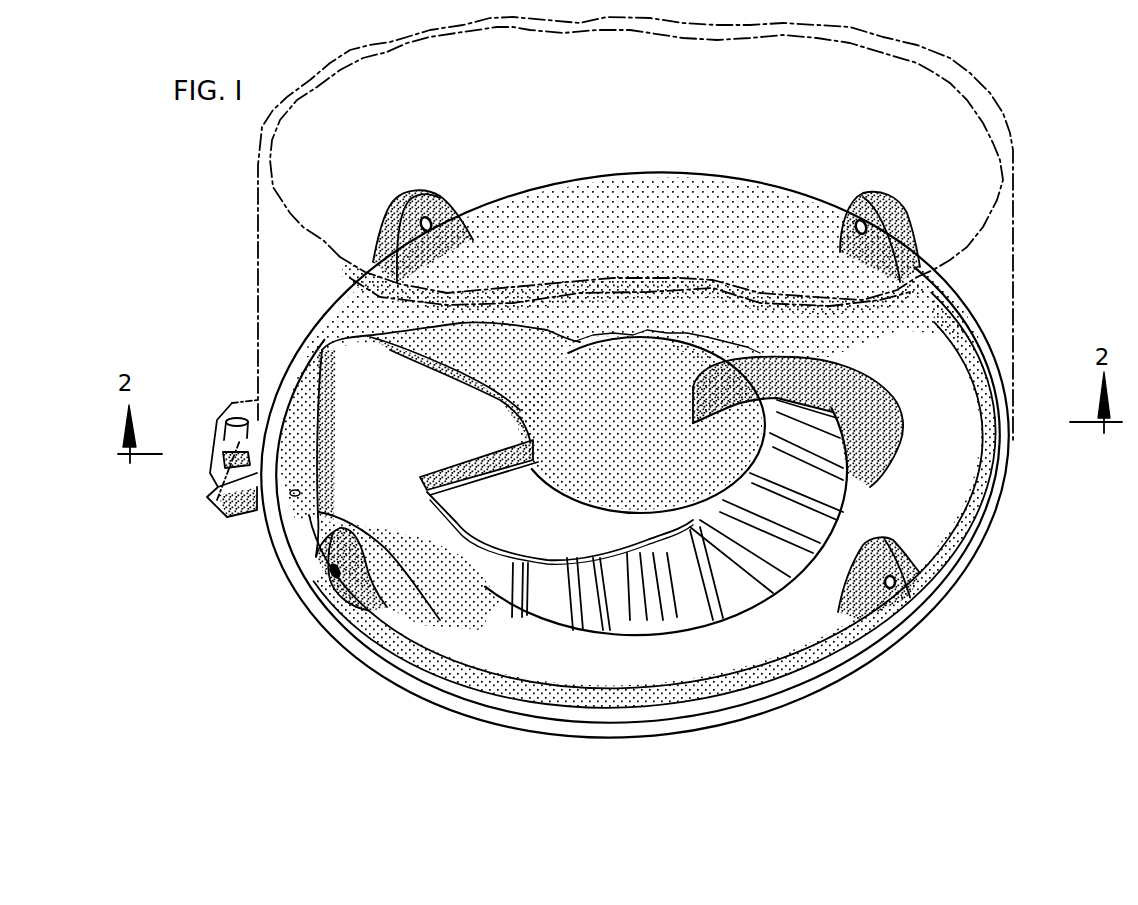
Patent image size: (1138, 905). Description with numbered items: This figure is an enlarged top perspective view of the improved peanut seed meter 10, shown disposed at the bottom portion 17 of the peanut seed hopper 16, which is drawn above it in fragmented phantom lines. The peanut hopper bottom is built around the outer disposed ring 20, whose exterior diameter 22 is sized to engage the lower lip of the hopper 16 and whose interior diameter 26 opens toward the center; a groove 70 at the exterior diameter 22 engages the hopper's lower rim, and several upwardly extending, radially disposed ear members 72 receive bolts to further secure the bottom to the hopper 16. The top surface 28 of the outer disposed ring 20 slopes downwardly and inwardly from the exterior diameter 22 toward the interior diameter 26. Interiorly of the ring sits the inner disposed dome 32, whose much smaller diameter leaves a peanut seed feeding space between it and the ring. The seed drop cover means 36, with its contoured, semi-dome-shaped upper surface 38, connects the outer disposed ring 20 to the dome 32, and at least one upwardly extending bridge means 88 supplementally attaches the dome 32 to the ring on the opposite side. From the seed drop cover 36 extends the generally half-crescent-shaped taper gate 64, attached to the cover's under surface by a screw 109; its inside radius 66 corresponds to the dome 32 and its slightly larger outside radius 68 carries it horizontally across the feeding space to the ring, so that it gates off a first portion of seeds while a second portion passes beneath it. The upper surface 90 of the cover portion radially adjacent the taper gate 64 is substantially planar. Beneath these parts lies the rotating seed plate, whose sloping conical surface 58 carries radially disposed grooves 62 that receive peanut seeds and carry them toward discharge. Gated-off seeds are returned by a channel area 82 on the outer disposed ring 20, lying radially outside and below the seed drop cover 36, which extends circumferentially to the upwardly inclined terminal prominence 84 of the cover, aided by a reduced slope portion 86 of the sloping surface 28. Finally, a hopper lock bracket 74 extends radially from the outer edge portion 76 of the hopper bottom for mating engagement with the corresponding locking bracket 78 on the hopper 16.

The improved peanut seed meter 10 is at (1012, 535).
The peanut seed hopper 16 is at (1018, 240).
The bottom portion of hopper 17 is at (1013, 385).
The outer disposed ring 20 is at (962, 453).
The exterior diameter 22 is at (980, 513).
The interior diameter 26 is at (760, 593).
The top surface of outer disposed ring 28 is at (914, 344).
The inner disposed dome 32 is at (611, 375).
The seed drop cover means 36 is at (405, 462).
The upper surface of seed drop cover 38 is at (342, 413).
The sloping conical surface 58 is at (667, 611).
The grooves 62 is at (625, 610).
The taper gate 64 is at (498, 513).
The inside radius 66 is at (530, 580).
The outside radius 68 is at (614, 510).
The groove 70 is at (977, 560).
The ear members 72 is at (418, 195).
The hopper lock bracket 74 is at (227, 520).
The outer edge portion 76 is at (888, 655).
The locking bracket 78 is at (240, 400).
The channel area 82 is at (232, 483).
The terminal prominence 84 is at (490, 351).
The reduced slope portion 86 is at (440, 618).
The bridge means 88 is at (900, 377).
The upper surface of seed drop cover portion 90 is at (430, 473).
The screw 109 is at (323, 547).